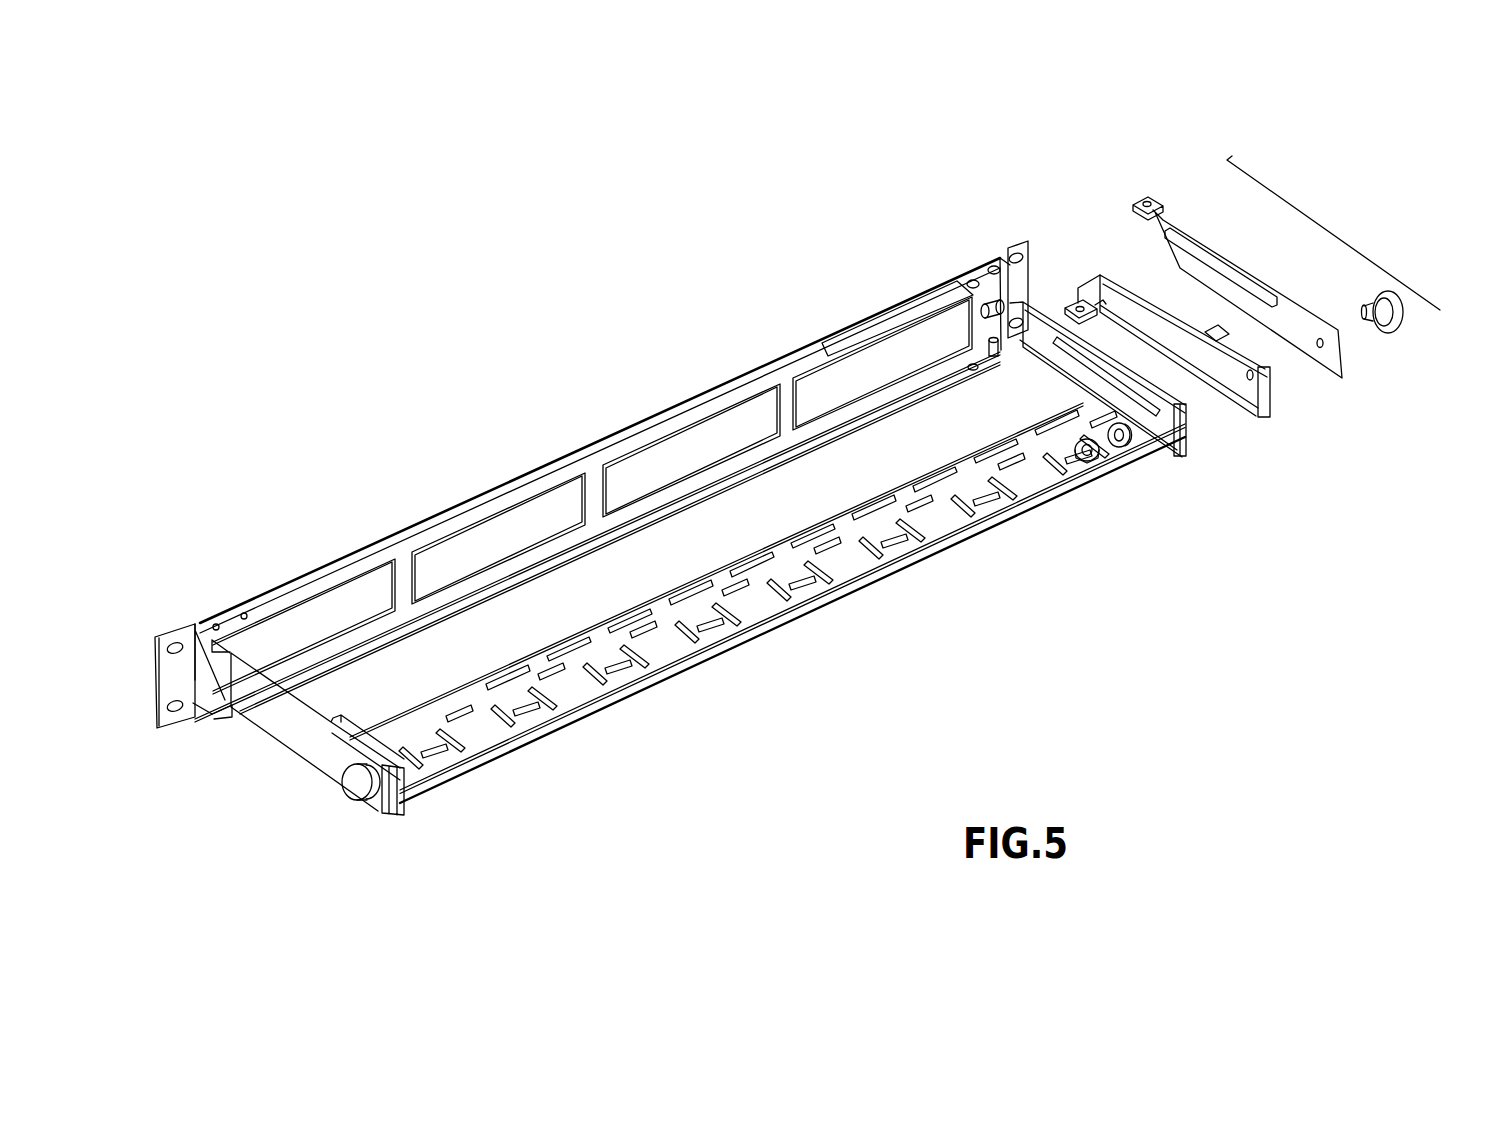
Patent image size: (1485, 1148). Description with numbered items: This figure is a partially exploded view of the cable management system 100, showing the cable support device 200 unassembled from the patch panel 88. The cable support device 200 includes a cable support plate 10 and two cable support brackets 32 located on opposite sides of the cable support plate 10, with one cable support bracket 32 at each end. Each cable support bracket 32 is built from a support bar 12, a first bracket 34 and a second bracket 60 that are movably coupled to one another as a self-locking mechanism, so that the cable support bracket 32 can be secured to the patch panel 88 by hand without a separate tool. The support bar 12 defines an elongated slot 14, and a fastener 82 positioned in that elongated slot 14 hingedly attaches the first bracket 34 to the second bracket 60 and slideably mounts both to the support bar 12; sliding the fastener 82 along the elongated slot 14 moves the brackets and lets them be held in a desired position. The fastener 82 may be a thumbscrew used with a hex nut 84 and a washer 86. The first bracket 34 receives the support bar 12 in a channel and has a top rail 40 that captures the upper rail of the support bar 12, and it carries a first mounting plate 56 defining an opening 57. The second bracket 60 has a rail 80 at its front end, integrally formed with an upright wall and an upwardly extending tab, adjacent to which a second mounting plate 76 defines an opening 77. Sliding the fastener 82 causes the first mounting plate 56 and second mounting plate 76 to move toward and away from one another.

The cable management system 100 is at (772, 284).
The cable support device 200 is at (832, 622).
The cable support plate 10 is at (950, 548).
The patch panel 88 is at (656, 428).
The fastener 82 is at (353, 787).
The support bar 12 is at (1187, 438).
The elongated slot 14 is at (1133, 405).
The hex nut 84 is at (1090, 463).
The washer 86 is at (1120, 448).
The first mounting plate 56 is at (1076, 302).
The opening 57 is at (1100, 310).
The first bracket 34 is at (1272, 403).
The top rail 40 is at (1217, 330).
The second bracket 60 is at (1346, 362).
The second mounting plate 76 is at (1147, 198).
The opening 77 is at (1133, 206).
The rail 80 is at (1272, 288).
The cable support bracket 32 is at (1263, 261).